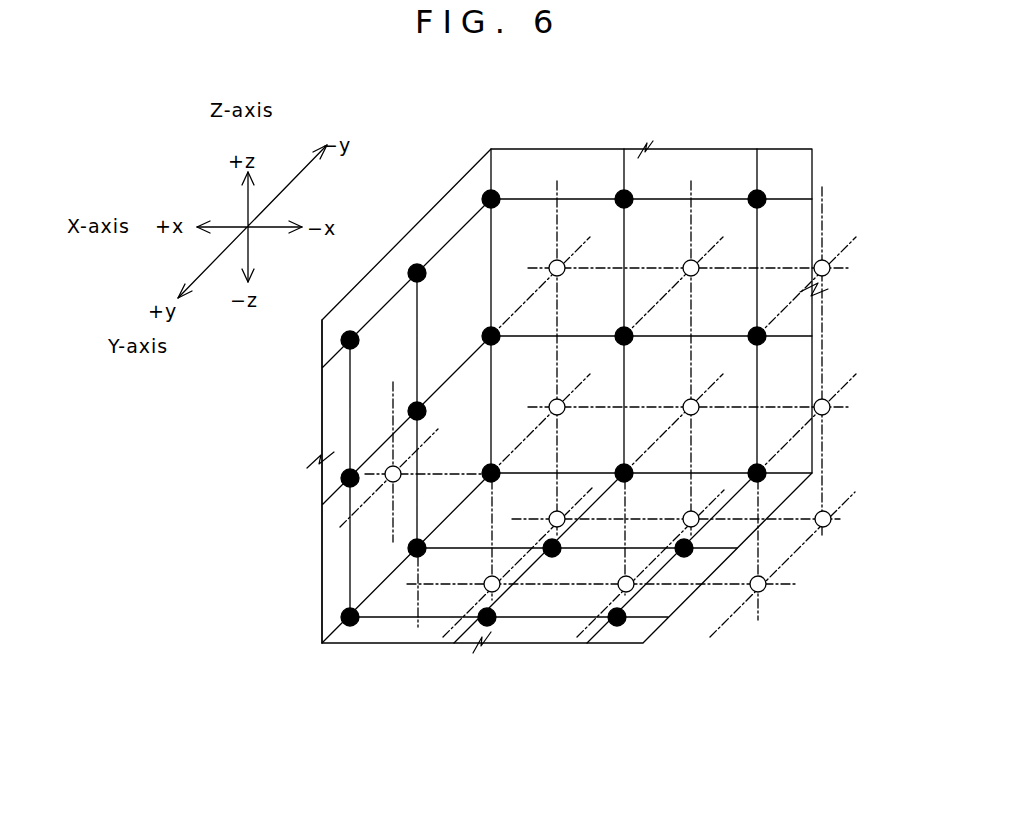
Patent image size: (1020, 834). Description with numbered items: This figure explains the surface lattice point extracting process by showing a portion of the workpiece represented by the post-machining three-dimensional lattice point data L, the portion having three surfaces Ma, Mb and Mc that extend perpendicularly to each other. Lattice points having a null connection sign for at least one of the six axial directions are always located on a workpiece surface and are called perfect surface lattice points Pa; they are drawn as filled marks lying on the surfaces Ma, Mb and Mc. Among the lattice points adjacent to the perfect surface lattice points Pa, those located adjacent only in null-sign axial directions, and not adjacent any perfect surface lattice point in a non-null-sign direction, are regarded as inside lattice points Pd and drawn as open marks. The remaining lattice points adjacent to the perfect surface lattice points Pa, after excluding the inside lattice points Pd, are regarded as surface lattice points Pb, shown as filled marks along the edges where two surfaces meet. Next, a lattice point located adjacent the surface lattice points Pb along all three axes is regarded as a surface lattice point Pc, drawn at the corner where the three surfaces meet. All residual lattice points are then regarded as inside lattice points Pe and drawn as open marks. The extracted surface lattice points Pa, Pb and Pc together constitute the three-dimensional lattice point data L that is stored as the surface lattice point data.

The three-dimensional lattice point data L is at (803, 115).
The surface Ma is at (600, 166).
The surface Mb is at (452, 190).
The surface Mc is at (557, 637).
The perfect surface lattice point Pa is at (633, 198).
The surface lattice point Pb is at (500, 198).
The surface lattice point Pc is at (488, 466).
The inside lattice point Pd is at (684, 266).
The inside lattice point Pe is at (549, 266).